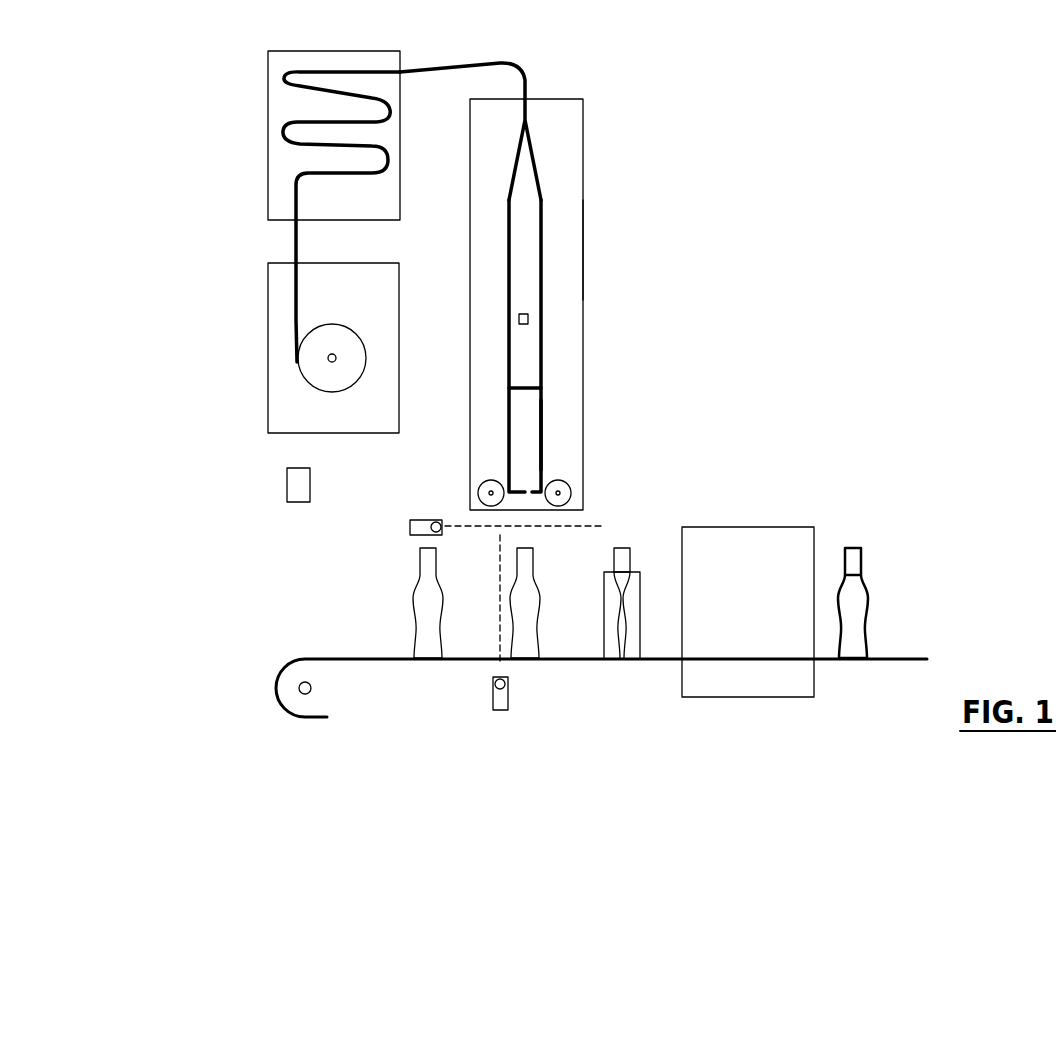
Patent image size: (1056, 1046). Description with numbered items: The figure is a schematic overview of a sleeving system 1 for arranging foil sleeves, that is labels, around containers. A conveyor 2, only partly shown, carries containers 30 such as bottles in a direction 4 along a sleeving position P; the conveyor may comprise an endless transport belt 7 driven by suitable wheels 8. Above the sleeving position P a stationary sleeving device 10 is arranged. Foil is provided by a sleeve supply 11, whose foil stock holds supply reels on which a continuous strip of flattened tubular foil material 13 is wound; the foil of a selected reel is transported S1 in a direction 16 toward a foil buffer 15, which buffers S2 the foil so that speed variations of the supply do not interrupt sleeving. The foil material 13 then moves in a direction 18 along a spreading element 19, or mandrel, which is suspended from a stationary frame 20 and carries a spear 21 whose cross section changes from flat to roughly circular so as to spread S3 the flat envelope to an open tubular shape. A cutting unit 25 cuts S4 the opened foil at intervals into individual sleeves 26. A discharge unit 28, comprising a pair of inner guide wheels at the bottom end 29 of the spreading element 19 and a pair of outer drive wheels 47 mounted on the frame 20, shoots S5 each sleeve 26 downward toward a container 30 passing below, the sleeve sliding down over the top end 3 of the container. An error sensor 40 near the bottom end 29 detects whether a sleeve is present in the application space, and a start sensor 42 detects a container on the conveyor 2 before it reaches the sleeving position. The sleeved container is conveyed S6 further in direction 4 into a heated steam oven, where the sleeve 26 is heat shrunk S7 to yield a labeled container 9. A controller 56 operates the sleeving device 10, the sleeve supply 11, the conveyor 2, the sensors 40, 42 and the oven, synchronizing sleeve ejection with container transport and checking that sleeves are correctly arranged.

The sleeving system 1 is at (887, 270).
The conveyor 2 is at (615, 672).
The top end 3 is at (527, 562).
The direction 4 is at (370, 583).
The endless transport belt 7 is at (356, 658).
The wheels 8 is at (311, 688).
The labeled container 9 is at (862, 553).
The sleeving device 10 is at (600, 188).
The sleeve supply 11 is at (248, 433).
The foil material 13 is at (296, 243).
The foil buffer 15 is at (273, 148).
The direction 16 is at (206, 158).
The direction 18 is at (447, 53).
The spreading element 19 is at (533, 378).
The stationary frame 20 is at (570, 293).
The spear 21 is at (527, 162).
The cutting unit 25 is at (517, 398).
The sleeve 26 is at (544, 430).
The discharge unit 28 is at (547, 475).
The bottom end 29 is at (528, 495).
The container 30 is at (430, 616).
The error sensor 40 is at (422, 525).
The start sensor 42 is at (503, 700).
The drive wheels 47 is at (560, 493).
The controller 56 is at (292, 490).
The transporting step S1 is at (245, 327).
The buffering step S2 is at (248, 99).
The spreading step S3 is at (506, 142).
The cutting step S4 is at (670, 352).
The shooting step S5 is at (675, 455).
The conveying step S6 is at (375, 718).
The heat shrinking step S7 is at (757, 522).
The sleeving position P is at (556, 672).